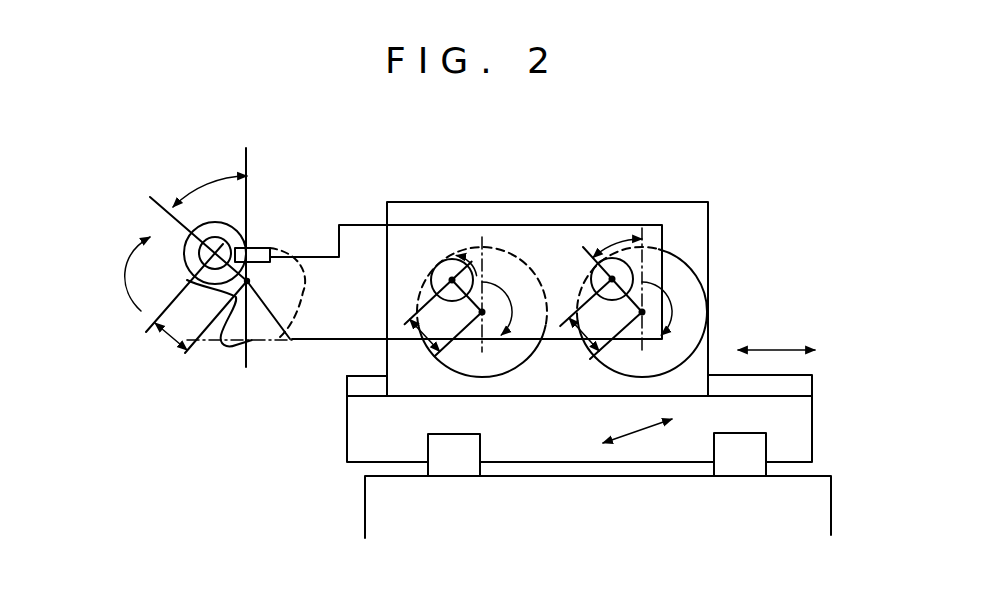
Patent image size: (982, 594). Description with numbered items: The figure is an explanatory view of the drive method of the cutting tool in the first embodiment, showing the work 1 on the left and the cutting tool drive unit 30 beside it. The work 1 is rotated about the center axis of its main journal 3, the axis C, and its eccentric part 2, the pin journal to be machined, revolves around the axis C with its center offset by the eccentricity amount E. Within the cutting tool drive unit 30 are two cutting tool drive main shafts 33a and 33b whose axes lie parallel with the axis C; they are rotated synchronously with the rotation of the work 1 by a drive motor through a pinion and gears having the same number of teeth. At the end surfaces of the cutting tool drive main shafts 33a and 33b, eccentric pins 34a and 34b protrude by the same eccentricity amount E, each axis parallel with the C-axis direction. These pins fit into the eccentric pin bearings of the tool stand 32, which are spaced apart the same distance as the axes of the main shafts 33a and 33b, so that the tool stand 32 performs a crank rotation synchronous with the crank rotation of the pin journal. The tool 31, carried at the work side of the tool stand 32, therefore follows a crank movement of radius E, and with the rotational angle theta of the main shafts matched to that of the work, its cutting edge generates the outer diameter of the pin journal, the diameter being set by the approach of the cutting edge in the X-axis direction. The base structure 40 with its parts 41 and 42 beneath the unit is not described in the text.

The work 1 is at (237, 332).
The eccentric part 2 is at (187, 257).
The main journal 3 is at (797, 287).
The cutting tool drive unit 30 is at (708, 225).
The tool 31 is at (257, 247).
The tool stand 32 is at (358, 242).
The cutting tool drive main shaft 33a is at (509, 270).
The cutting tool drive main shaft 33b is at (682, 283).
The eccentric pin 34a is at (438, 263).
The eccentric pin 34b is at (617, 268).
The base 40 is at (625, 456).
The slide table 41 is at (797, 414).
The guide foot 42 is at (812, 478).